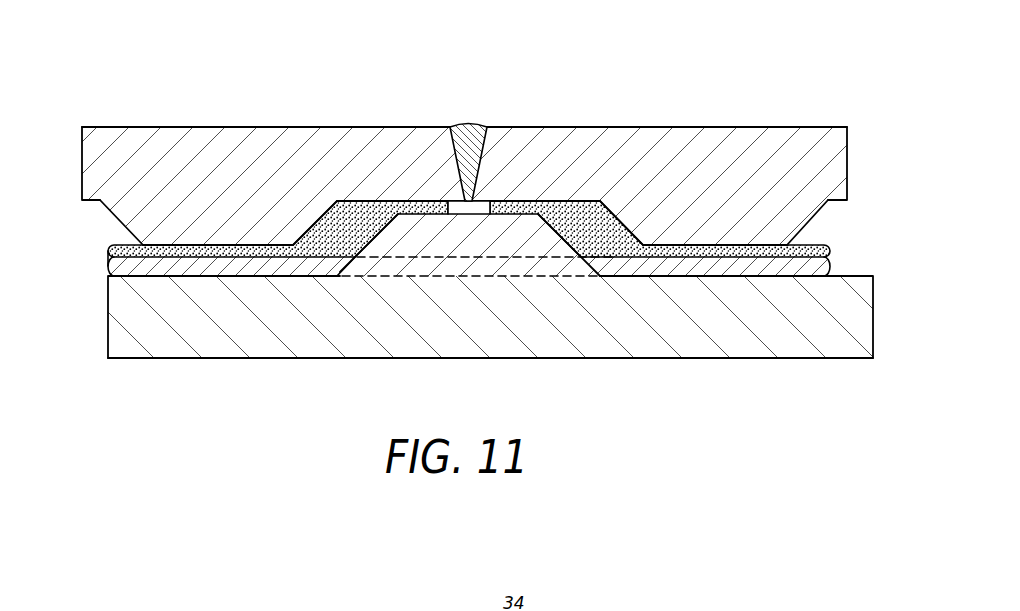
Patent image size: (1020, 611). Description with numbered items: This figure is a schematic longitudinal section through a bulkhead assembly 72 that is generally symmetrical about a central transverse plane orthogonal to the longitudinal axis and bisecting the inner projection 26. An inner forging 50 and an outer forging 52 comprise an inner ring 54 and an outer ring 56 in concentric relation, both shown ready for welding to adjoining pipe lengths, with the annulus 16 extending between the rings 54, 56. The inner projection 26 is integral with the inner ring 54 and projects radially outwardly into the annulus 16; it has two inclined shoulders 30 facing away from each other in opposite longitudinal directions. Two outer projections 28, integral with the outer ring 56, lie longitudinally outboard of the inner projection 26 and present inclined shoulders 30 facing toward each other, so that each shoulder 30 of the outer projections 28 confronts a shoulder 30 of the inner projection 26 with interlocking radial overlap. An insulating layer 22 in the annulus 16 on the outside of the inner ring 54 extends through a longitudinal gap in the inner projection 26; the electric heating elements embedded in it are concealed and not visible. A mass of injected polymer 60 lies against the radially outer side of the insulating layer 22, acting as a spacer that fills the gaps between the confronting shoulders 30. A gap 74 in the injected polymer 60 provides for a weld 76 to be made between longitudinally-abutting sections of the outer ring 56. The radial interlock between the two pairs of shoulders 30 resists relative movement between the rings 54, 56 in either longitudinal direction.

The annulus 16 is at (107, 231).
The insulating layer 22 is at (298, 268).
The inner projection 26 is at (430, 232).
The outer projection 28 is at (217, 228).
The inclined shoulder 30 is at (310, 220).
The inner forging 50 is at (838, 365).
The outer forging 52 is at (812, 121).
The inner ring 54 is at (138, 347).
The outer ring 56 is at (117, 135).
The injected polymer 60 is at (348, 217).
The bulkhead assembly 72 is at (185, 70).
The gap 74 is at (480, 205).
The weld 76 is at (467, 130).